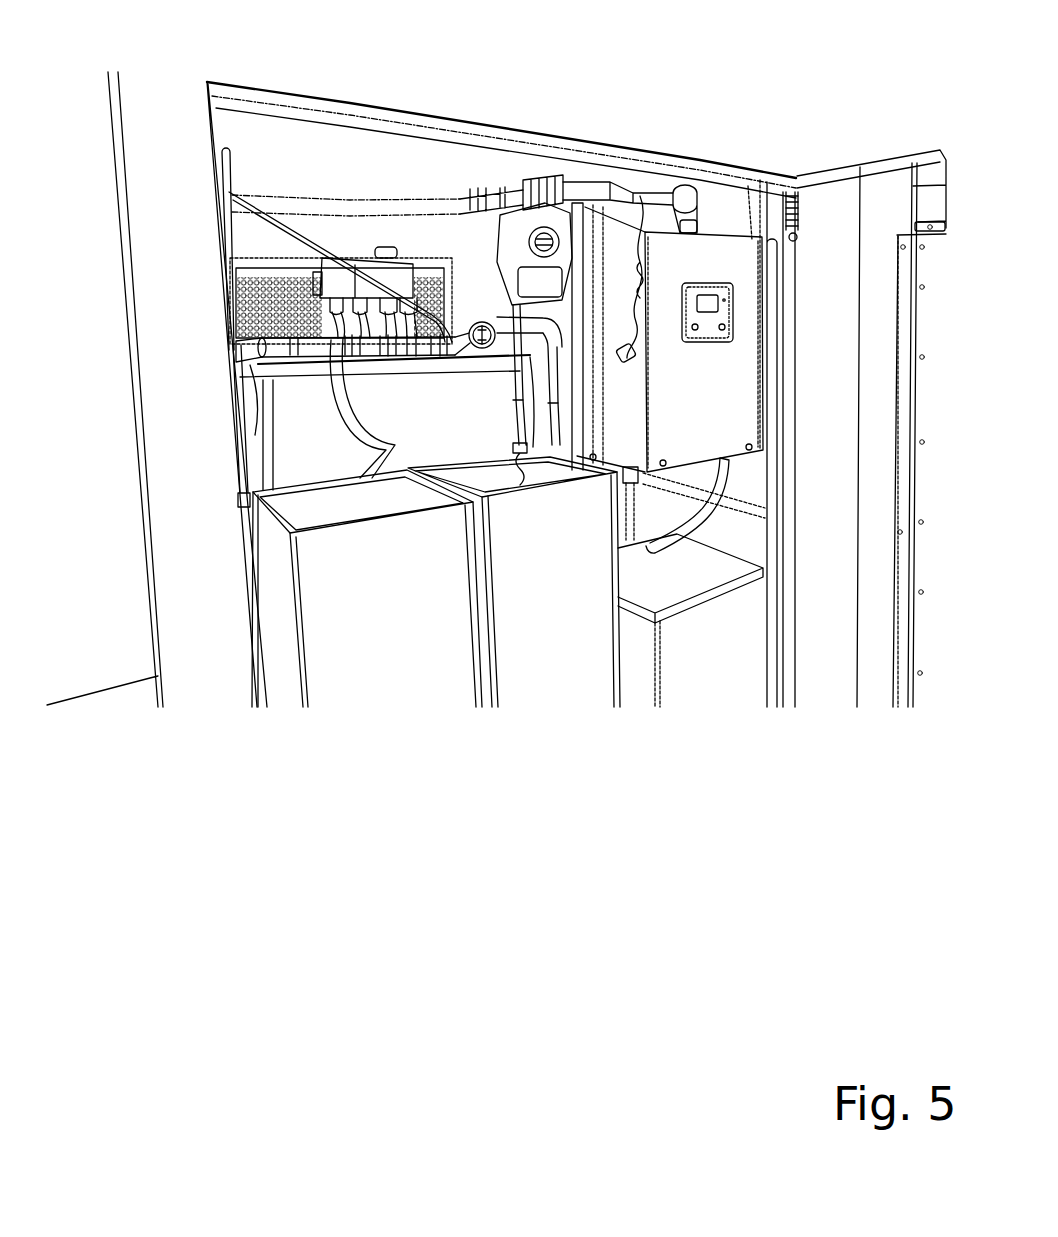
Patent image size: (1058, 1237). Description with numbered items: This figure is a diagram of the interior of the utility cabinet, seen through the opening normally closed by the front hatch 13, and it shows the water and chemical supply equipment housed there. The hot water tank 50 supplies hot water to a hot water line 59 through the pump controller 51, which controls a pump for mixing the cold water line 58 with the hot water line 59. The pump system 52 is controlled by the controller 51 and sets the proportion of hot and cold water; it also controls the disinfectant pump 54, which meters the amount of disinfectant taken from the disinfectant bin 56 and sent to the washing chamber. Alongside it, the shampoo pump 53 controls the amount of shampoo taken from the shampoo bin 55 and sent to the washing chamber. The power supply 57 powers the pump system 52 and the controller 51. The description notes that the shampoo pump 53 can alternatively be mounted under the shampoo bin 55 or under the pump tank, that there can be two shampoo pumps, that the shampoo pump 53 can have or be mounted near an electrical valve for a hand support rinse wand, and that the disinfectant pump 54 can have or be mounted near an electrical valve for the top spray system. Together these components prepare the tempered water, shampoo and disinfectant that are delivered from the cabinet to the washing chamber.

The front hatch 13 is at (834, 195).
The hot water tank 50 is at (283, 430).
The pump controller 51 is at (743, 248).
The pump system 52 is at (612, 252).
The shampoo pump 53 is at (395, 265).
The disinfectant pump 54 is at (520, 220).
The shampoo bin 55 is at (345, 512).
The disinfectant bin 56 is at (518, 475).
The power supply 57 is at (708, 688).
The cold water line 58 is at (686, 197).
The hot water line 59 is at (308, 208).